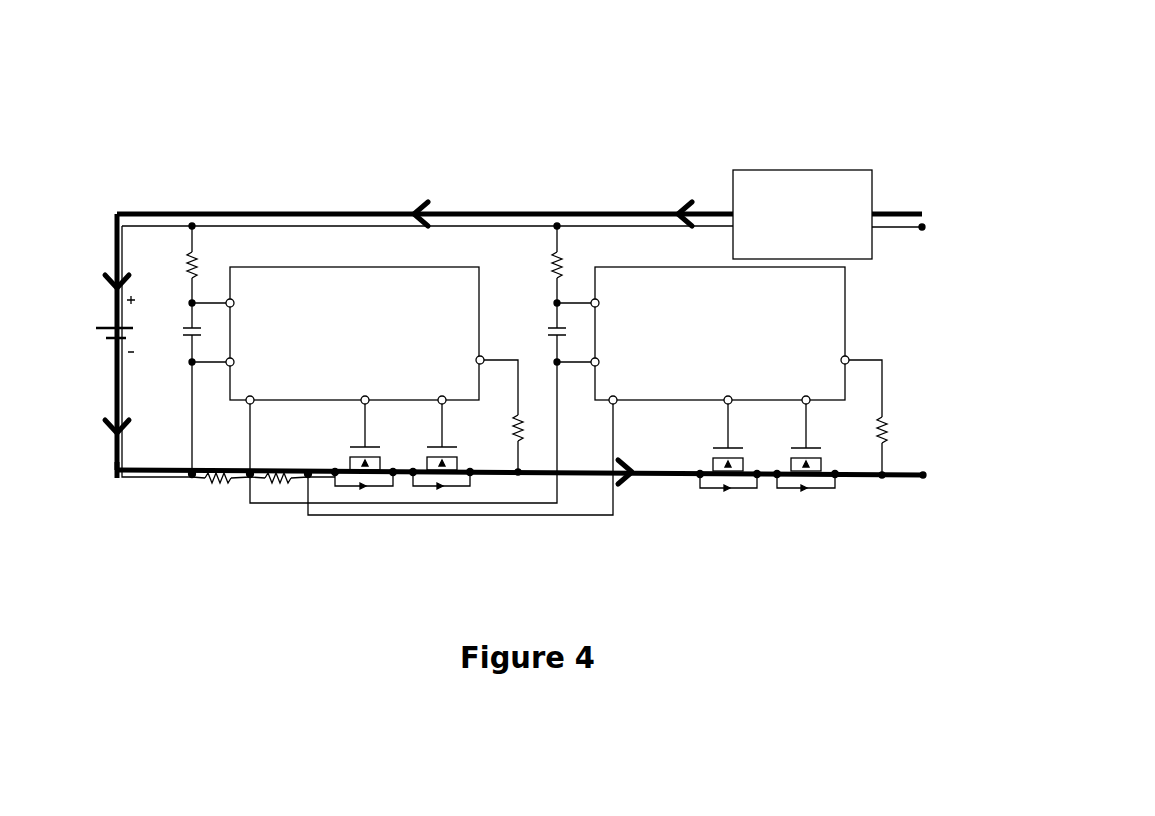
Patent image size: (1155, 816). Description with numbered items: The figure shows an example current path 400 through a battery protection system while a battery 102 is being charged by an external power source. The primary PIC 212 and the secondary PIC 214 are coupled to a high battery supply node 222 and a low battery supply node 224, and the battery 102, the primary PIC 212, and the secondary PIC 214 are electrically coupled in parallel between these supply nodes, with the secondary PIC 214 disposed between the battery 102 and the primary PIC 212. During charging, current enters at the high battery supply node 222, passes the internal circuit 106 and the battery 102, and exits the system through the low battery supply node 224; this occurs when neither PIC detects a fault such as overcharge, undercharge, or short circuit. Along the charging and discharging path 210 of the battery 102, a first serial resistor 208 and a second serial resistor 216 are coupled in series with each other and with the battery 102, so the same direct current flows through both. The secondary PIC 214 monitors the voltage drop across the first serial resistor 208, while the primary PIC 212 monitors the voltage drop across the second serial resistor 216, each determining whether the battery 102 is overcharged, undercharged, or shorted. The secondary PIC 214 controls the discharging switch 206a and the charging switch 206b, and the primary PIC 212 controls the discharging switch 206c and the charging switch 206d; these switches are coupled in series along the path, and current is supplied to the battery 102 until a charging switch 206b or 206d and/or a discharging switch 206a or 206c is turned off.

The current path 400 is at (1050, 112).
The battery 102 is at (100, 326).
The internal circuit 106 is at (785, 200).
The high battery supply node 222 is at (1110, 251).
The low battery supply node 224 is at (1118, 502).
The secondary PIC 214 is at (338, 330).
The primary PIC 212 is at (703, 330).
The first serial resistor 208 is at (212, 492).
The second serial resistor 216 is at (282, 462).
The charging and discharging path 210 is at (132, 480).
The discharging switch 206a is at (386, 460).
The charging switch 206b is at (462, 460).
The discharging switch 206c is at (719, 496).
The charging switch 206d is at (810, 496).